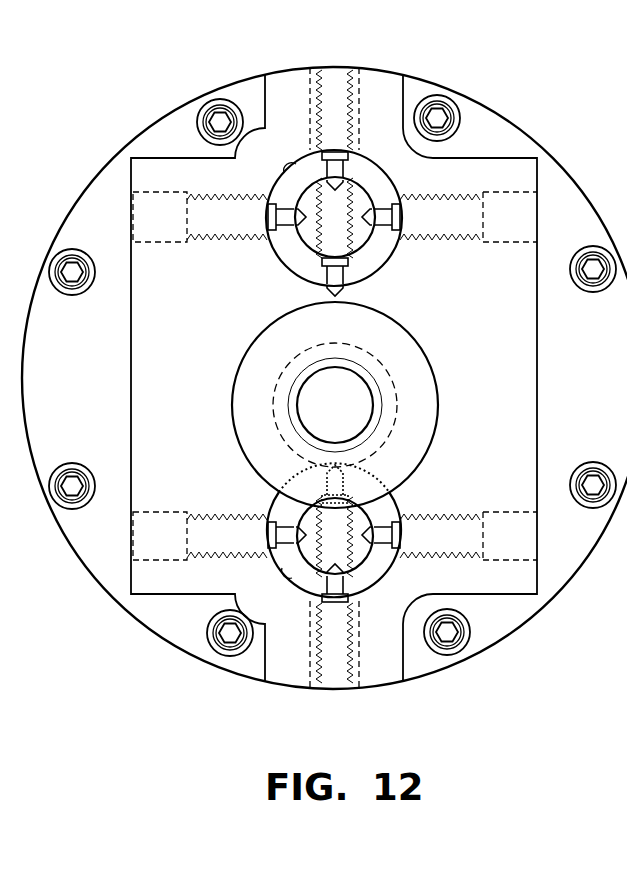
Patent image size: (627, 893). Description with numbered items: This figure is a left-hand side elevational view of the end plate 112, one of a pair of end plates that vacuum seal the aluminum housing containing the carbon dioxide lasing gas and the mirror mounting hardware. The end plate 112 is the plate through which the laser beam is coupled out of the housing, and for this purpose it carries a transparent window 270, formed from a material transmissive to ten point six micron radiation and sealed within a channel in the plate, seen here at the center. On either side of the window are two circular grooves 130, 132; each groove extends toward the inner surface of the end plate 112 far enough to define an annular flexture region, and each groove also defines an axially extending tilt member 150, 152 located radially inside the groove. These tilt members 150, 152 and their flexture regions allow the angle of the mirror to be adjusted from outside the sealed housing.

The end plate 112 is at (475, 133).
The circular groove 130 is at (240, 176).
The circular groove 132 is at (282, 566).
The tilt member 150 is at (300, 238).
The tilt member 152 is at (358, 508).
The transparent window 270 is at (373, 387).